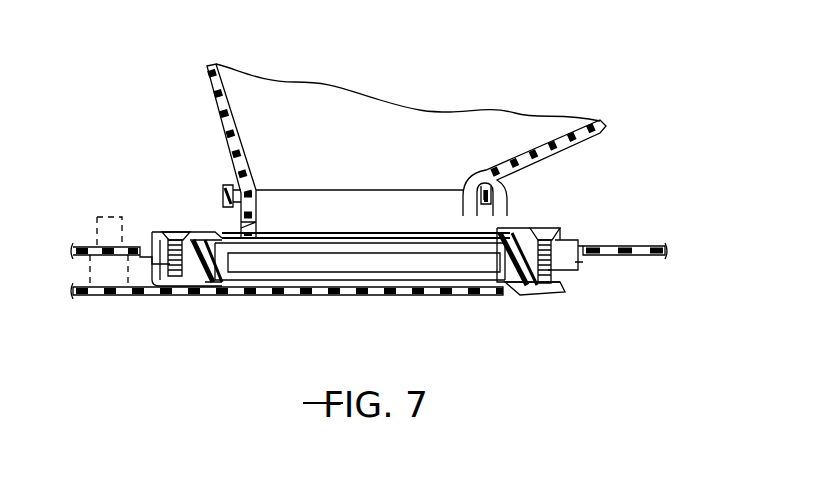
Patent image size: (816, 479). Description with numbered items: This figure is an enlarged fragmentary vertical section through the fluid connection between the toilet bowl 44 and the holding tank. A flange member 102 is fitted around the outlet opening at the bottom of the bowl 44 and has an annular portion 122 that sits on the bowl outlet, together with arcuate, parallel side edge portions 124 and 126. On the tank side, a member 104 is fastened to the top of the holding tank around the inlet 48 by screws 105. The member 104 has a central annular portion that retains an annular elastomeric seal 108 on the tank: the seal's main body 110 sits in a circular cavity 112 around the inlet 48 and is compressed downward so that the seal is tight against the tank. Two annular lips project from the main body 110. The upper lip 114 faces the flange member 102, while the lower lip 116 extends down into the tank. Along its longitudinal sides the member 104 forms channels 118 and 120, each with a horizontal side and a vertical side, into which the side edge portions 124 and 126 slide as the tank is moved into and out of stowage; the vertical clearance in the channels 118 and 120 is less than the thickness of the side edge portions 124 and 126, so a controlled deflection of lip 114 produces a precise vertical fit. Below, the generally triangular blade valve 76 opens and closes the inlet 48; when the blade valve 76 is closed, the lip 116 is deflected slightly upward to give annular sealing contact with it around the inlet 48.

The bowl 44 is at (547, 137).
The inlet 48 is at (507, 278).
The blade valve 76 is at (190, 293).
The flange member 102 is at (335, 232).
The member 104 is at (567, 233).
The screws 105 is at (175, 234).
The annular elastomeric seal 108 is at (323, 263).
The main body 110 is at (505, 280).
The circular cavity 112 is at (217, 280).
The annular lip 114 is at (360, 243).
The annular lip 116 is at (393, 293).
The channel 118 is at (215, 232).
The channel 120 is at (492, 172).
The annular portion 122 is at (250, 226).
The side edge portion 124 is at (195, 234).
The side edge portion 126 is at (518, 235).